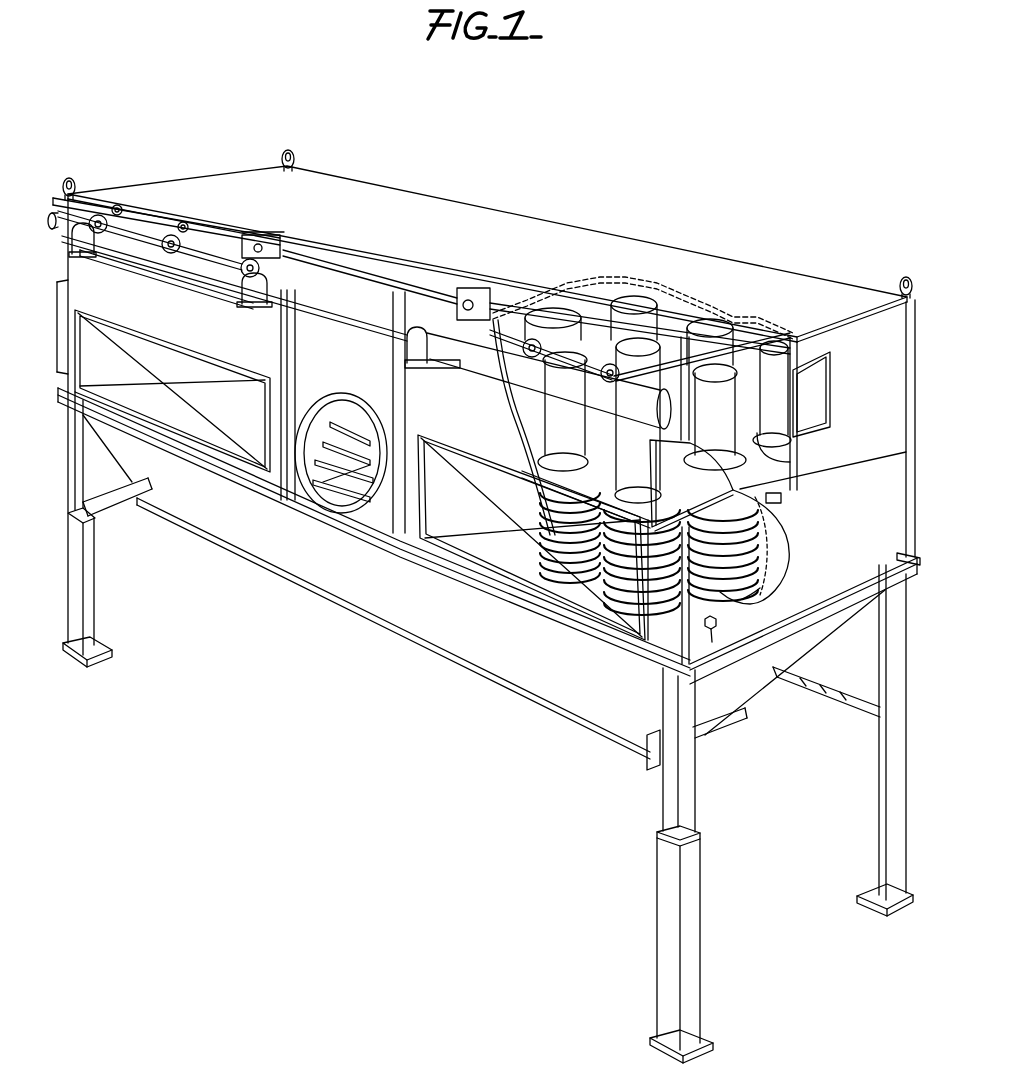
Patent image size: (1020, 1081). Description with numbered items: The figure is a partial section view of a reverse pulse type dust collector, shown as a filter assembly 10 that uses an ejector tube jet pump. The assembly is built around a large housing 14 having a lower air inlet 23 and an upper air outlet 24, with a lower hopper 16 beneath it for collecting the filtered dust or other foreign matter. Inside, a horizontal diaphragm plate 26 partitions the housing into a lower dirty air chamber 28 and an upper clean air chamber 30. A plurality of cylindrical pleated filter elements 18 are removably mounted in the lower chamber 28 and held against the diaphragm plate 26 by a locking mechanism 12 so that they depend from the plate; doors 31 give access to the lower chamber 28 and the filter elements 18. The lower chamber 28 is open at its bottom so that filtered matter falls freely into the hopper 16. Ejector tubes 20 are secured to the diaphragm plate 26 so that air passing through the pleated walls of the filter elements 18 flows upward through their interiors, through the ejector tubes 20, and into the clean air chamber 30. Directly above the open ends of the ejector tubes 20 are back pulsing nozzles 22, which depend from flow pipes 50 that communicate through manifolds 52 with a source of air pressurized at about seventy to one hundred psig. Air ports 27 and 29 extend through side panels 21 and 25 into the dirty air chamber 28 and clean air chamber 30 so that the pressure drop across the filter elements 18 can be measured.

The filter assembly 10 is at (540, 218).
The locking mechanism 12 is at (613, 500).
The housing 14 is at (870, 322).
The lower hopper 16 is at (477, 647).
The cylindrical pleated filter elements 18 is at (790, 537).
The ejector tubes 20 is at (783, 393).
The side panel 21 is at (887, 503).
The back pulsing nozzles 22 is at (543, 307).
The lower air inlet 23 is at (360, 517).
The upper air outlet 24 is at (67, 308).
The side panel 25 is at (887, 437).
The horizontal diaphragm plate 26 is at (753, 463).
The air port 27 is at (713, 642).
The lower dirty air chamber 28 is at (770, 572).
The air port 29 is at (779, 498).
The upper clean air chamber 30 is at (593, 308).
The doors 31 is at (82, 295).
The flow pipes 50 is at (575, 298).
The manifolds 52 is at (218, 240).